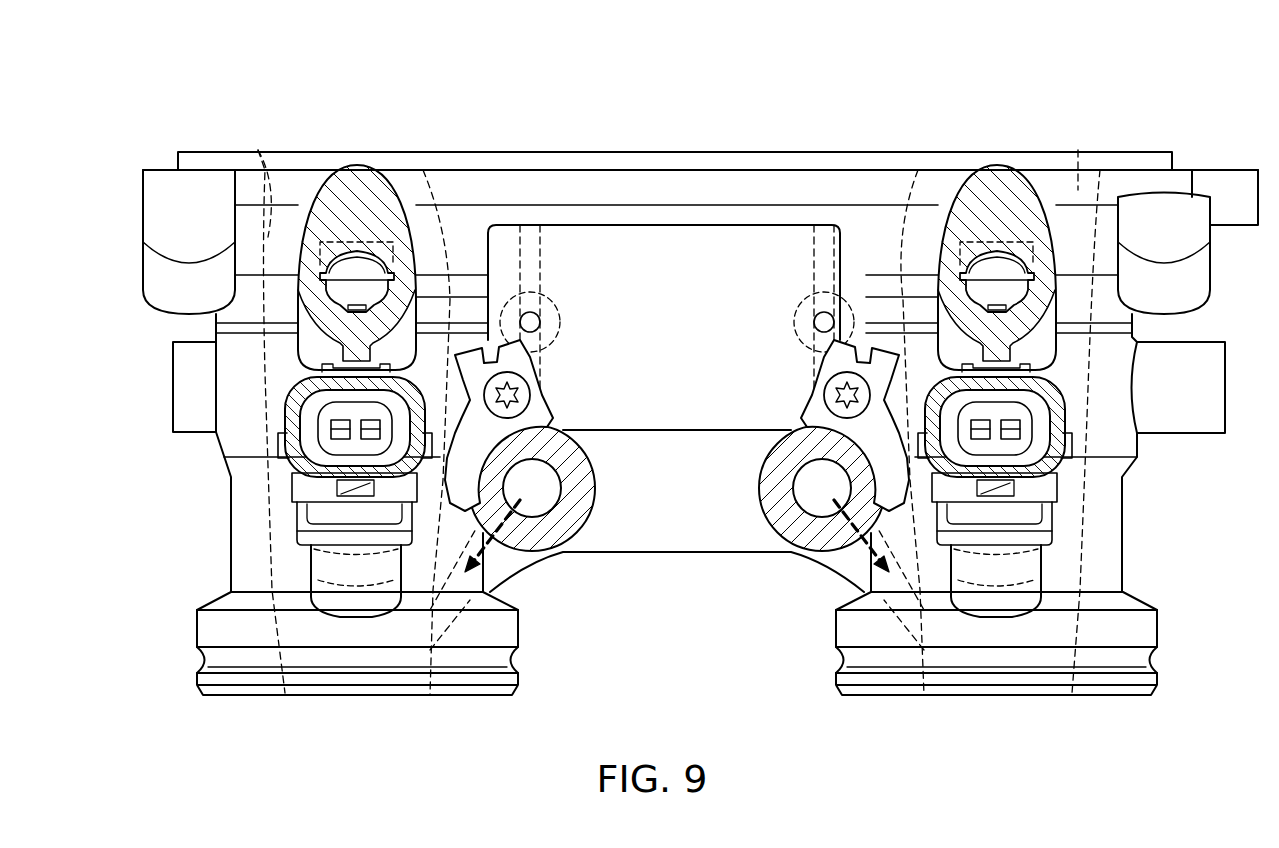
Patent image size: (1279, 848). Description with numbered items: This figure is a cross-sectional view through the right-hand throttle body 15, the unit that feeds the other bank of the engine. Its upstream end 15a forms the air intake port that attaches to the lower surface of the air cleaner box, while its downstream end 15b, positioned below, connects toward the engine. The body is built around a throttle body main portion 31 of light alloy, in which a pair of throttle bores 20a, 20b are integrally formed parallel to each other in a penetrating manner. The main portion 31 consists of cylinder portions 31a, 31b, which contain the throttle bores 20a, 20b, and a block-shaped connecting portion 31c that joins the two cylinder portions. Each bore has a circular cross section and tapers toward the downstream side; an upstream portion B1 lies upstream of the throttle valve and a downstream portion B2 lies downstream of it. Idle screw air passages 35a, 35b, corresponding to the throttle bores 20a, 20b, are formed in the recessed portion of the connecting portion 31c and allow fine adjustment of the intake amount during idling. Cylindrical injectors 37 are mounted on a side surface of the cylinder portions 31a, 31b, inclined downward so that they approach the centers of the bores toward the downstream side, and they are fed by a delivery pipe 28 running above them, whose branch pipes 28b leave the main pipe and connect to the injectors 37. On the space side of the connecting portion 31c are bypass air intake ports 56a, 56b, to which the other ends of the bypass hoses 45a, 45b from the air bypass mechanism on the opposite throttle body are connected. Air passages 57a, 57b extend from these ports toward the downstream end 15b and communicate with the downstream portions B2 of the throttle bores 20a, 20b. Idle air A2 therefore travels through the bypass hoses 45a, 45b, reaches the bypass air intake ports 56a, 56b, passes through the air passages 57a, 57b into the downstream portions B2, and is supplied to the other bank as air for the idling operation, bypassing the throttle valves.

The throttle body 15 is at (185, 151).
The upstream end 15a is at (578, 150).
The downstream end 15b is at (450, 697).
The throttle bore 20a is at (258, 150).
The throttle bore 20b is at (918, 170).
The delivery pipe 28 is at (968, 171).
The branch pipe 28b is at (357, 195).
The throttle body main portion 31 is at (293, 151).
The cylinder portion 31a is at (233, 441).
The cylinder portion 31b is at (1118, 443).
The connecting portion 31c is at (678, 518).
The idle screw air passage 35a is at (512, 235).
The idle screw air passage 35b is at (862, 235).
The injector 37 is at (283, 463).
The bypass hose 45a is at (587, 527).
The bypass hose 45b is at (763, 530).
The bypass air intake port 56a is at (535, 500).
The bypass air intake port 56b is at (817, 500).
The air passage 57a is at (470, 602).
The air passage 57b is at (884, 602).
The idle air A2 is at (510, 557).
The upstream portion B1 is at (423, 170).
The downstream portion B2 is at (322, 633).